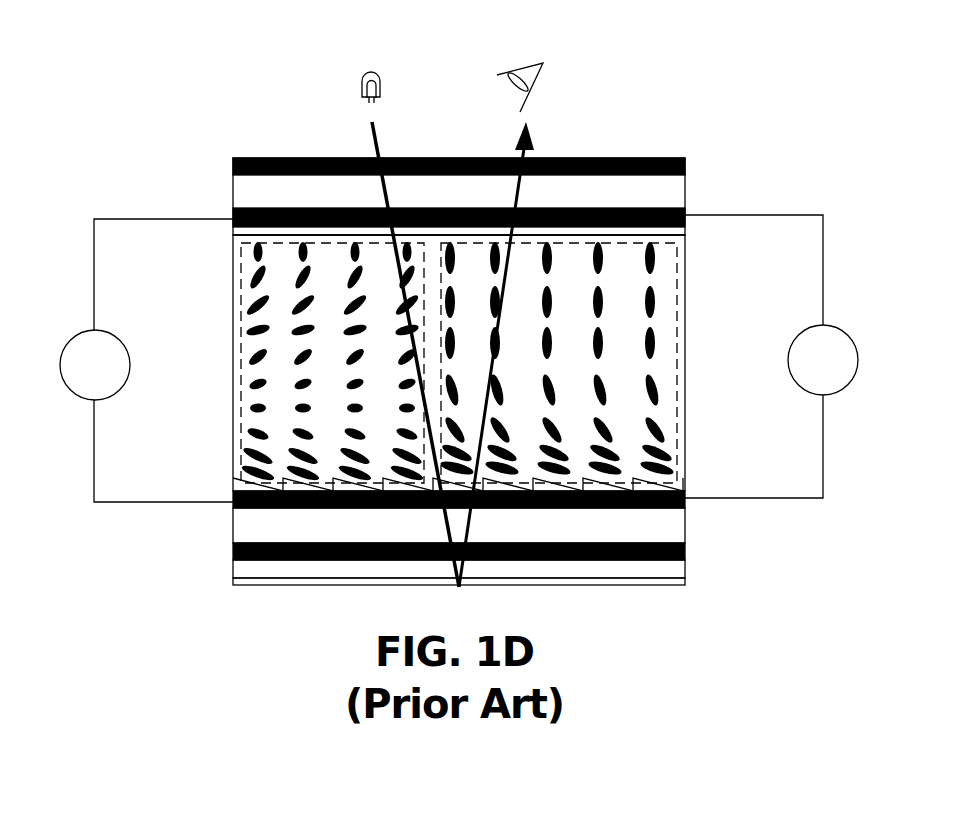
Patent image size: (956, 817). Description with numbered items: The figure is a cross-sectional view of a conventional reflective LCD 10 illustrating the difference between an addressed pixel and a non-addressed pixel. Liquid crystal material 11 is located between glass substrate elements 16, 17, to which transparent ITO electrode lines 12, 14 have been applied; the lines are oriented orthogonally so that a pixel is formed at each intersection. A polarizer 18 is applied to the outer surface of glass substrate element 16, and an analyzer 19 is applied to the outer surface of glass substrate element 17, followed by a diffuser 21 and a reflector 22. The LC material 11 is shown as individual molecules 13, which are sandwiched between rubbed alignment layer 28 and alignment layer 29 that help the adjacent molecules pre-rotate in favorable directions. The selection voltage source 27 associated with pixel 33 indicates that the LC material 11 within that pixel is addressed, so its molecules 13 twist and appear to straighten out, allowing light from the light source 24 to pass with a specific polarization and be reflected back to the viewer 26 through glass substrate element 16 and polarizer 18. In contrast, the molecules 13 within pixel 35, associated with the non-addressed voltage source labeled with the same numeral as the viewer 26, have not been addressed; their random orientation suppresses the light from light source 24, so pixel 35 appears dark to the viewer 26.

The conventional reflective LCD 10 is at (193, 60).
The liquid crystal (LC) material 11 is at (233, 400).
The ITO electrode line 12 is at (233, 218).
The molecule 13 is at (658, 340).
The ITO electrode line 14 is at (233, 504).
The glass substrate element 16 is at (685, 188).
The glass substrate element 17 is at (685, 524).
The polarizer 18 is at (233, 166).
The analyzer 19 is at (233, 552).
The diffuser 21 is at (685, 567).
The reflector 22 is at (688, 580).
The light source 24 is at (362, 77).
The viewer 26 is at (543, 73).
The voltage source Vs 27 is at (858, 362).
The alignment layer 28 is at (685, 228).
The alignment layer 29 is at (655, 485).
The pixel 33 is at (677, 277).
The pixel 35 is at (240, 270).